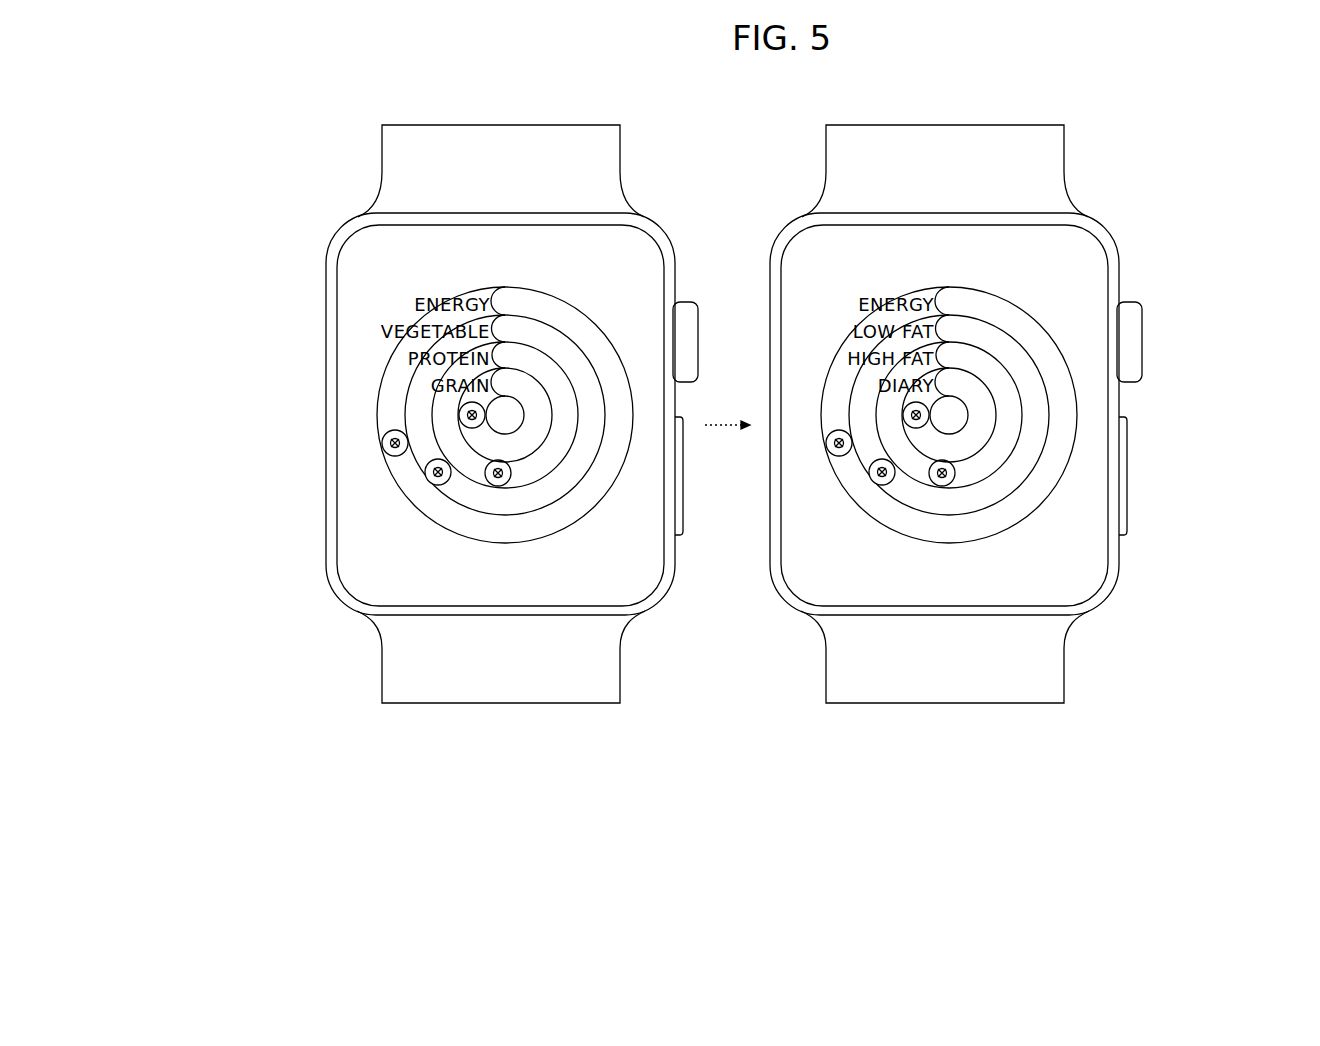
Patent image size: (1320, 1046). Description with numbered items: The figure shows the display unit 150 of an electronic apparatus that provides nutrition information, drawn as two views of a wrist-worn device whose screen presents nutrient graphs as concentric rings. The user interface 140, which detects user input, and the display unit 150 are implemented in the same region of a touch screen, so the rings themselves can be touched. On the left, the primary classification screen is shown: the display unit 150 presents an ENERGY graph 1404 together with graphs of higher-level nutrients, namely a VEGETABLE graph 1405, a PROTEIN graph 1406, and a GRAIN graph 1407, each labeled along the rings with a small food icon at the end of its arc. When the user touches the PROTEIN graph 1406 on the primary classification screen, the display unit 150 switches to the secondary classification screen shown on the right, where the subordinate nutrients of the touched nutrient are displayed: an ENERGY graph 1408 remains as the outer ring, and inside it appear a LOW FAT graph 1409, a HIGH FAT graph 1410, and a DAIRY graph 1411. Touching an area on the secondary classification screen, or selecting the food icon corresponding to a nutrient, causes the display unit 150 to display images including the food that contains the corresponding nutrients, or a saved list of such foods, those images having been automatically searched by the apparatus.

The user interface 140 is at (823, 307).
The display unit 150 is at (814, 733).
The ENERGY graph 1404 is at (480, 443).
The VEGETABLE graph 1405 is at (532, 468).
The PROTEIN graph 1406 is at (547, 492).
The GRAIN graph 1407 is at (568, 515).
The ENERGY graph 1408 is at (963, 300).
The LOW FAT graph 1409 is at (990, 347).
The HIGH FAT graph 1410 is at (1005, 390).
The DAIRY graph 1411 is at (980, 423).